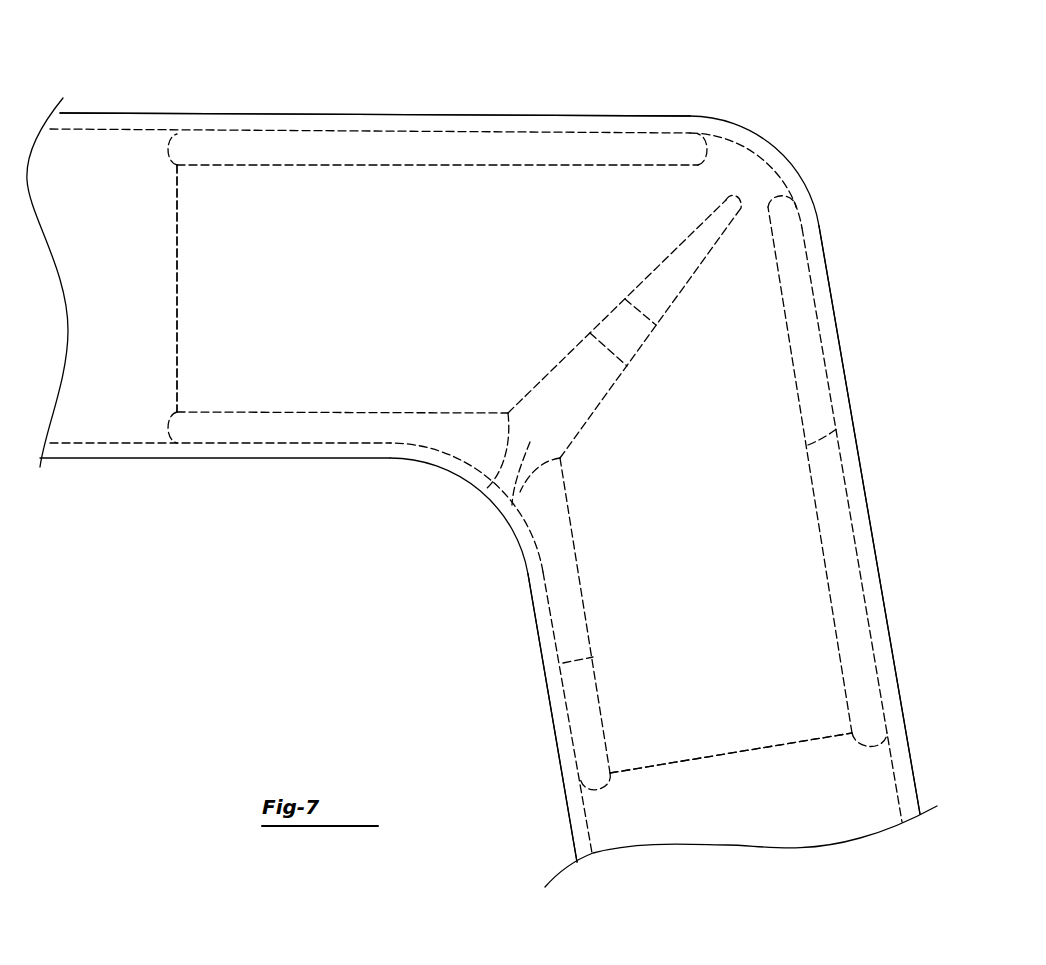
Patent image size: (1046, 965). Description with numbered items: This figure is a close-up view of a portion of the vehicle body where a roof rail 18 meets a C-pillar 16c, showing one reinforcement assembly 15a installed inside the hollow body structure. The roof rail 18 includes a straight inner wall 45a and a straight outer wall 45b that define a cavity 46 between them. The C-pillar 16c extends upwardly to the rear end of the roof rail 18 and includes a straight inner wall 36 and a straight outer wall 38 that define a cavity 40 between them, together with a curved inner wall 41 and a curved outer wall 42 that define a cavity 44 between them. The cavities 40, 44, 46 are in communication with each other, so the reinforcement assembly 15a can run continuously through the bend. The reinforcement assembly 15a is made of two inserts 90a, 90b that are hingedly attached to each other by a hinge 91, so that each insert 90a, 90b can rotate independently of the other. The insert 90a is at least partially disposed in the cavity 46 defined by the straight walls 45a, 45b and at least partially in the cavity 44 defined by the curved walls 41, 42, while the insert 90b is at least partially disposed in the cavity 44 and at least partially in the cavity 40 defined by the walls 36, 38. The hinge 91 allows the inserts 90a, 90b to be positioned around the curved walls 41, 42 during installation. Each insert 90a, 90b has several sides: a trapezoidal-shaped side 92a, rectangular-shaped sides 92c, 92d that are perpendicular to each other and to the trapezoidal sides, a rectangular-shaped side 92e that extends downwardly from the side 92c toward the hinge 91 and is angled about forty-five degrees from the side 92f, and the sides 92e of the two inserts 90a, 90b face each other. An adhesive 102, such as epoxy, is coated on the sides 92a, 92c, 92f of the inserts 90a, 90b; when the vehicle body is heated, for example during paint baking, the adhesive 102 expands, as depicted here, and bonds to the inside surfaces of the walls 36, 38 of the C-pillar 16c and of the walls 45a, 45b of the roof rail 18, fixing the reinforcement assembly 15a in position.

The roof rail 18 is at (248, 70).
The reinforcement assembly 15a is at (815, 296).
The C-pillar 16c is at (513, 633).
The straight inner wall 36 is at (558, 755).
The straight outer wall 38 is at (872, 535).
The cavity 40 is at (708, 797).
The curved inner wall 41 is at (470, 485).
The curved outer wall 42 is at (795, 172).
The cavity 44 is at (507, 495).
The straight inner wall 45a is at (152, 460).
The straight outer wall 45b is at (344, 113).
The cavity 46 is at (113, 163).
The insert 90a is at (437, 148).
The insert 90b is at (797, 382).
The hinge 91 is at (730, 167).
The side 92a is at (230, 333).
The side 92c is at (297, 413).
The side 92d is at (175, 300).
The side 92e is at (625, 299).
The side 92f is at (297, 165).
The adhesive 102 is at (618, 150).